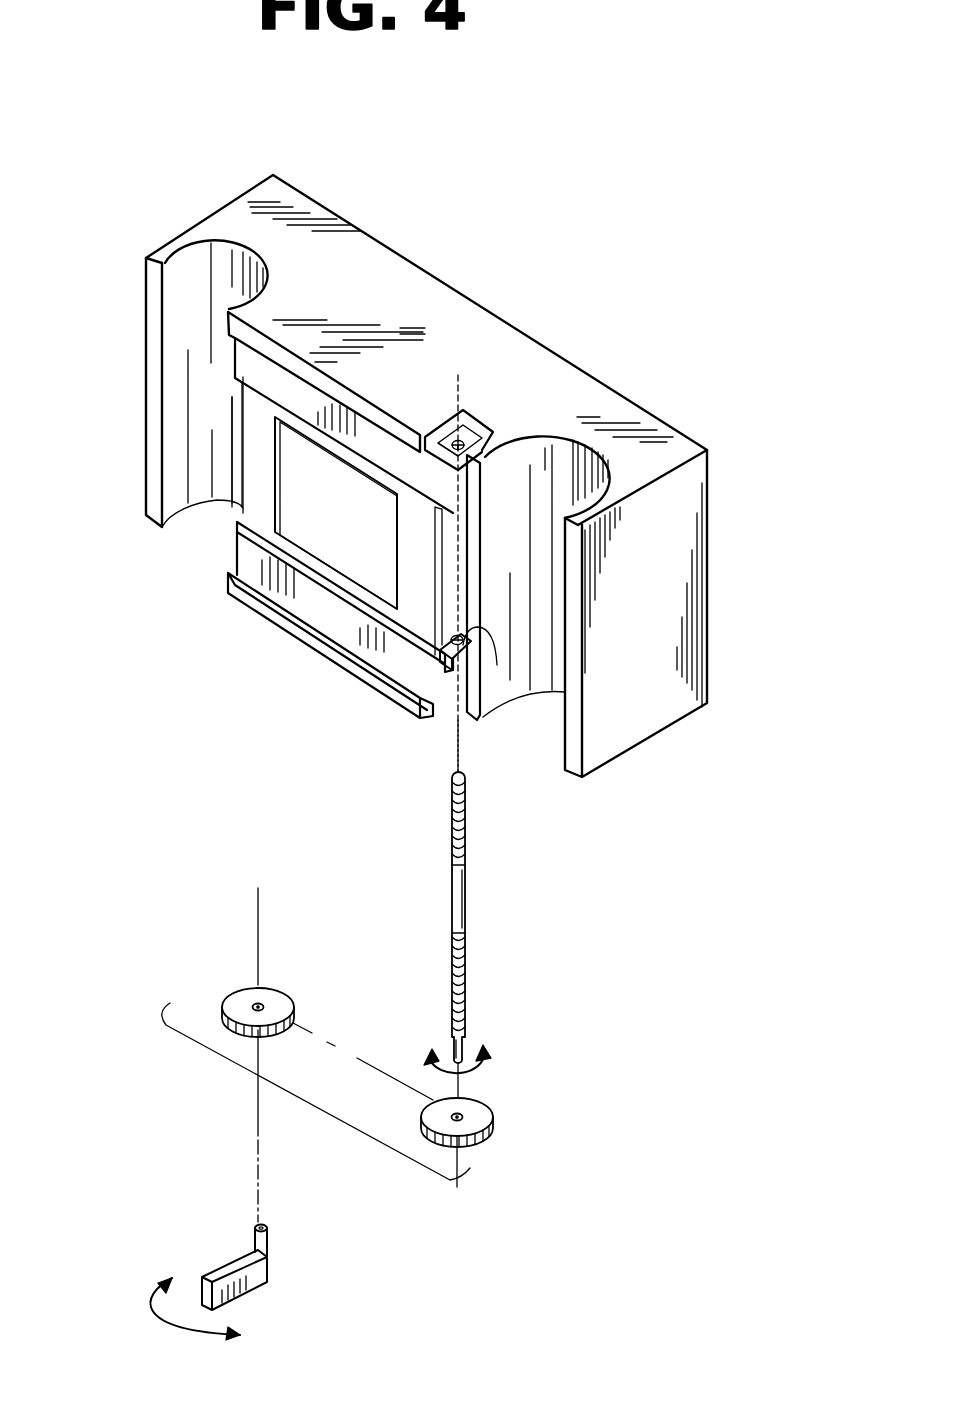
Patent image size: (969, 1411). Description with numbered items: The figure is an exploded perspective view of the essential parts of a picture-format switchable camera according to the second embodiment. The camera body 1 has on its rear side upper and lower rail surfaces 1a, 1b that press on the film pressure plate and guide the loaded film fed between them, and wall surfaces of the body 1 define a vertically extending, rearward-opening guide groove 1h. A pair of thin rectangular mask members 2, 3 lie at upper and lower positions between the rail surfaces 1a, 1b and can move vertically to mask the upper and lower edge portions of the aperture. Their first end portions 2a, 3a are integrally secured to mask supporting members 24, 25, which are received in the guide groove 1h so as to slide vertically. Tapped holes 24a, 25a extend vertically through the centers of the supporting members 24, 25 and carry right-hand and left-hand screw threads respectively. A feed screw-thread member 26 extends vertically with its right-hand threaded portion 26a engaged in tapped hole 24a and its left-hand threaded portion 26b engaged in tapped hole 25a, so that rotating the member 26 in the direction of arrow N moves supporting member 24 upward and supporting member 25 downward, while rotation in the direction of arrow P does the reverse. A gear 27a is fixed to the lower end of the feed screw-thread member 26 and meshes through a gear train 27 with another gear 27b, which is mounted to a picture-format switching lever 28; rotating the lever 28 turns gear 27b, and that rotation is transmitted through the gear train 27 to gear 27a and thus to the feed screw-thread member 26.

The body 1 is at (450, 323).
The rail surface 1a is at (232, 324).
The rail surface 1b is at (243, 593).
The guide groove 1h is at (447, 582).
The mask member 2 is at (233, 372).
The first end portion 2a is at (432, 473).
The mask member 3 is at (250, 553).
The first end portion 3a is at (423, 670).
The mask supporting member 24 is at (436, 440).
The tapped hole 24a is at (495, 433).
The mask supporting member 25 is at (455, 648).
The tapped hole 25a is at (497, 665).
The feed screw-thread member 26 is at (422, 909).
The right-hand threaded portion 26a is at (452, 833).
The left-hand threaded portion 26b is at (396, 984).
The gear train 27 is at (262, 1078).
The gear 27a is at (495, 1117).
The gear 27b is at (245, 986).
The picture-format switching lever 28 is at (250, 1272).